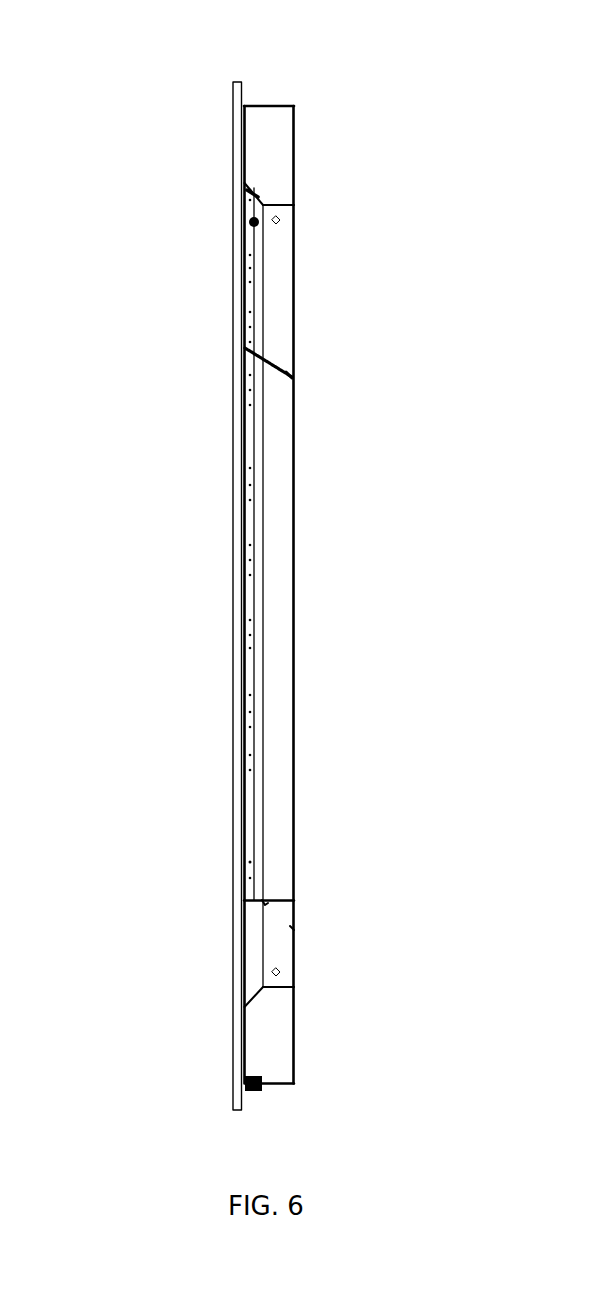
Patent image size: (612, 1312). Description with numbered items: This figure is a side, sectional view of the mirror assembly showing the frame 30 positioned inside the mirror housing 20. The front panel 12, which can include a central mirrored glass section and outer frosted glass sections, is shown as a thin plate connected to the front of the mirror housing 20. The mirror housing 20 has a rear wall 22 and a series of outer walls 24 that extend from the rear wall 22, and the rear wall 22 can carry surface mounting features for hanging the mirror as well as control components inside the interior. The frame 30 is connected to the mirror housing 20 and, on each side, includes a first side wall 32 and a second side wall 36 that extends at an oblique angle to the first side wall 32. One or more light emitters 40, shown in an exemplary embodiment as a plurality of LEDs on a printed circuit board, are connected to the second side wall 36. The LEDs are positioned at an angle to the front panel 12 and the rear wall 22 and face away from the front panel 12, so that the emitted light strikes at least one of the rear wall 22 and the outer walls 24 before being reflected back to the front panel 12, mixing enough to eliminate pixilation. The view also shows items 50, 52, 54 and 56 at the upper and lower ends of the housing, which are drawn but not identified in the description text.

The front panel 12 is at (233, 146).
The mirror housing 20 is at (272, 546).
The rear wall 22 is at (295, 163).
The outer walls 24 is at (267, 105).
The frame 30 is at (285, 623).
The first side wall 32 is at (273, 519).
The second side wall 36 is at (258, 702).
The light emitters 40 is at (248, 517).
The cable 50 is at (271, 362).
The cable connector end 52 is at (281, 373).
The lower bracket 54 is at (290, 933).
The bracket fastener 56 is at (292, 928).